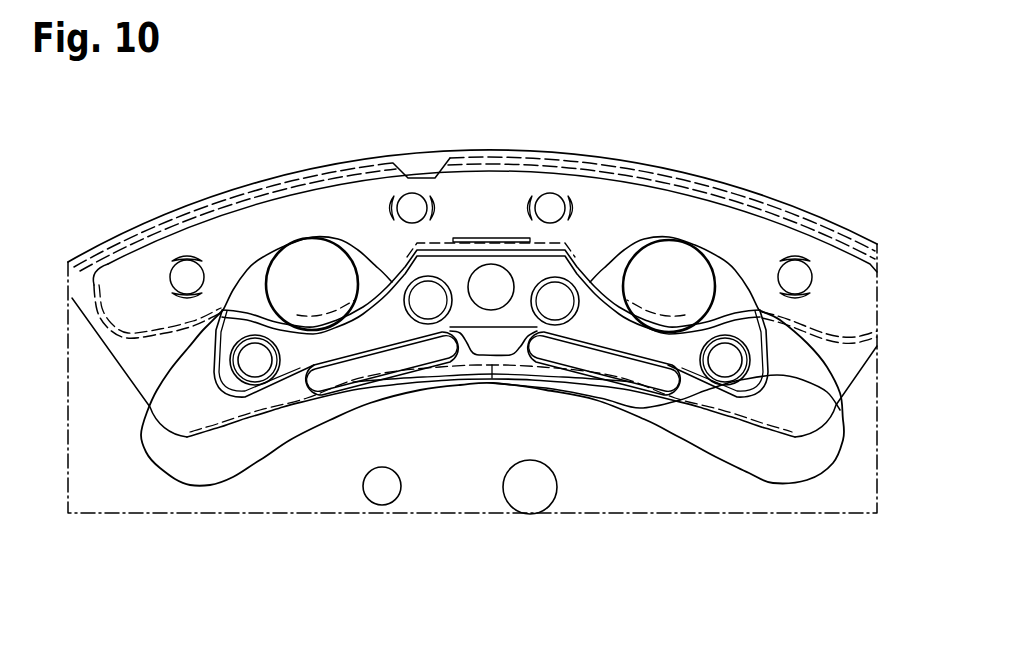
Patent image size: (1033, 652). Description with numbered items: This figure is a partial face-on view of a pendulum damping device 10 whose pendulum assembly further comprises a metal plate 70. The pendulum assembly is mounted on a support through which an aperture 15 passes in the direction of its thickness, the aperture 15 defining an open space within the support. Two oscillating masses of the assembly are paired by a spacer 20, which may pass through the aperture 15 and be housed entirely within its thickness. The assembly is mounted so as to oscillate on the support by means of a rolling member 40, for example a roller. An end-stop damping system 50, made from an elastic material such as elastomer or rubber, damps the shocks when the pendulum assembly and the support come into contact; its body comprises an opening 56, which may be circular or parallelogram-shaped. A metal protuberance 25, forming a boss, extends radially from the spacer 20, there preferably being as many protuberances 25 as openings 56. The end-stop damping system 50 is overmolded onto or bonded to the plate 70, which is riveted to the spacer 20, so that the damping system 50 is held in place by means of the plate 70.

The pendulum damping device 10 is at (118, 181).
The aperture 15 is at (800, 453).
The spacer 20 is at (757, 343).
The protuberance 25 is at (483, 355).
The rolling member 40 is at (677, 262).
The end-stop damping system 50 is at (380, 360).
The opening 56 is at (517, 353).
The metal plate 70 is at (790, 370).